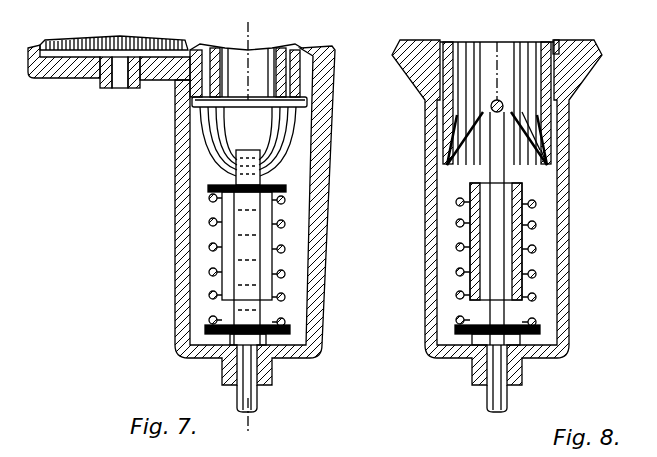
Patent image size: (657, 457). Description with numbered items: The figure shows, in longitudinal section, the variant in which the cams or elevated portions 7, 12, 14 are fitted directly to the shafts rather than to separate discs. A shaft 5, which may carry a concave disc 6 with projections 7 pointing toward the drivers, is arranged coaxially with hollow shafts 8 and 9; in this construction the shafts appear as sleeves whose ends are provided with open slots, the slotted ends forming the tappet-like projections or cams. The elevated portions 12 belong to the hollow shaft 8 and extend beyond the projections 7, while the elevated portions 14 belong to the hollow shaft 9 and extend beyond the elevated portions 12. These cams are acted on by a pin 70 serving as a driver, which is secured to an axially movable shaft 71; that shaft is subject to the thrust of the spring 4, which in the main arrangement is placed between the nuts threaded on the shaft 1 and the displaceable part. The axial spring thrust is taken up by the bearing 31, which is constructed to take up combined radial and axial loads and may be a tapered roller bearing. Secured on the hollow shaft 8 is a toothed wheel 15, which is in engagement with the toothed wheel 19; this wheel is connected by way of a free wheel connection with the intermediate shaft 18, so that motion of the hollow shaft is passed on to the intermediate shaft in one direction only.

In FIG. 7, the shaft 1 is at (240, 400).
In FIG. 8, the shaft 1 is at (487, 398).
In FIG. 7, the spring 4 is at (282, 214).
In FIG. 8, the spring 4 is at (530, 229).
In FIG. 7, the shaft 5 is at (226, 48).
In FIG. 8, the shaft 5 is at (470, 44).
In FIG. 7, the concave disc 6 is at (192, 104).
In FIG. 7, the projections 7 is at (210, 130).
In FIG. 8, the projections 7 is at (529, 138).
In FIG. 7, the hollow shaft 8 is at (214, 48).
In FIG. 8, the hollow shaft 8 is at (452, 44).
In FIG. 7, the hollow shaft 9 is at (197, 50).
In FIG. 8, the hollow shaft 9 is at (535, 44).
In FIG. 7, the elevated portions 12 is at (222, 146).
In FIG. 8, the elevated portions 12 is at (527, 145).
In FIG. 7, the elevated portions 14 is at (278, 145).
In FIG. 8, the elevated portions 14 is at (540, 170).
In FIG. 8, the toothed wheel 15 is at (556, 42).
In FIG. 7, the intermediate shaft 18 is at (112, 86).
In FIG. 7, the toothed wheel 19 is at (82, 45).
In FIG. 7, the bearing 31 is at (255, 333).
In FIG. 7, the pin 70 is at (288, 122).
In FIG. 8, the pin 70 is at (466, 138).
In FIG. 7, the axially movable shaft 71 is at (262, 178).
In FIG. 8, the axially movable shaft 71 is at (490, 170).